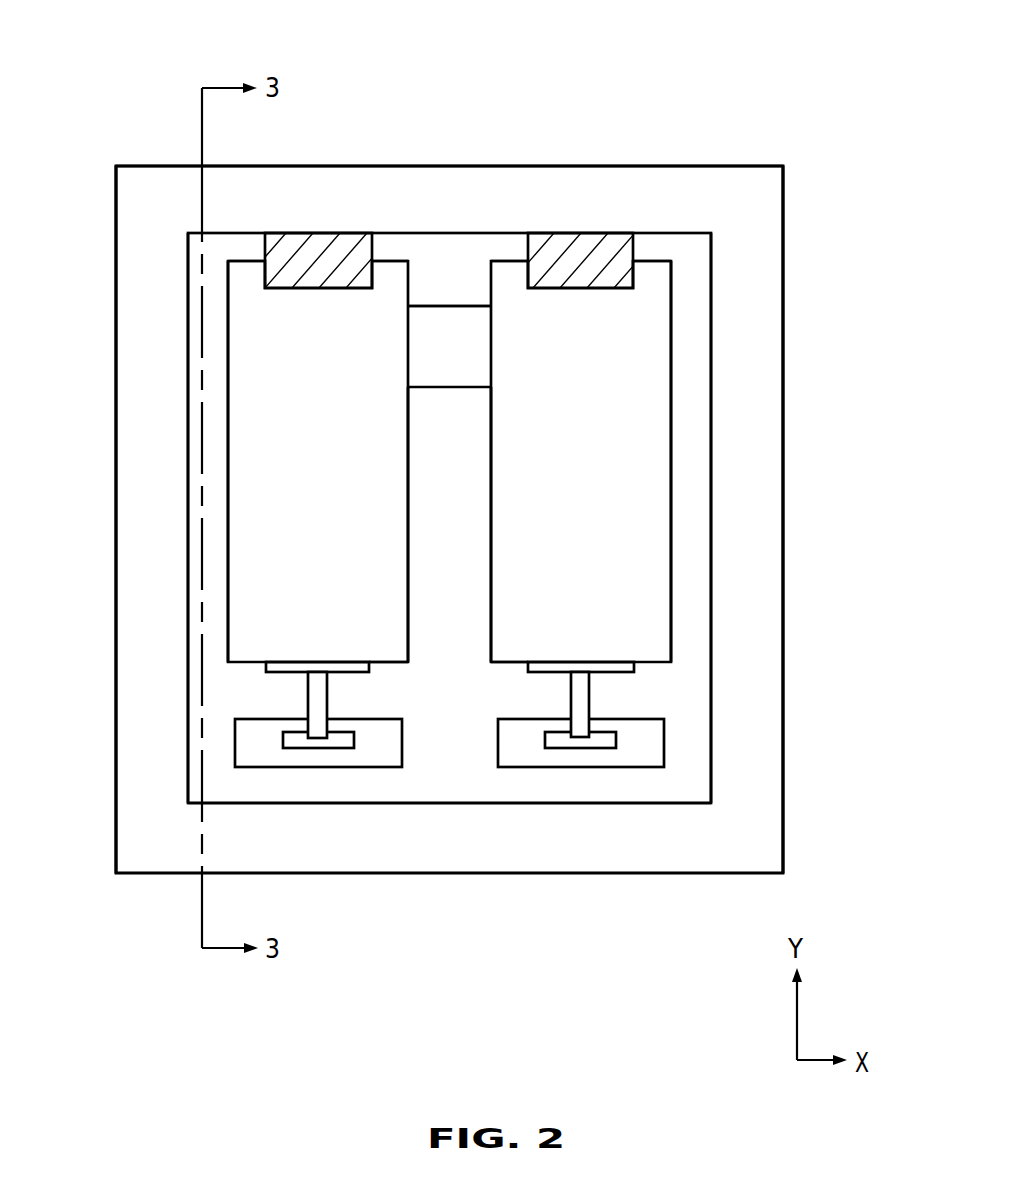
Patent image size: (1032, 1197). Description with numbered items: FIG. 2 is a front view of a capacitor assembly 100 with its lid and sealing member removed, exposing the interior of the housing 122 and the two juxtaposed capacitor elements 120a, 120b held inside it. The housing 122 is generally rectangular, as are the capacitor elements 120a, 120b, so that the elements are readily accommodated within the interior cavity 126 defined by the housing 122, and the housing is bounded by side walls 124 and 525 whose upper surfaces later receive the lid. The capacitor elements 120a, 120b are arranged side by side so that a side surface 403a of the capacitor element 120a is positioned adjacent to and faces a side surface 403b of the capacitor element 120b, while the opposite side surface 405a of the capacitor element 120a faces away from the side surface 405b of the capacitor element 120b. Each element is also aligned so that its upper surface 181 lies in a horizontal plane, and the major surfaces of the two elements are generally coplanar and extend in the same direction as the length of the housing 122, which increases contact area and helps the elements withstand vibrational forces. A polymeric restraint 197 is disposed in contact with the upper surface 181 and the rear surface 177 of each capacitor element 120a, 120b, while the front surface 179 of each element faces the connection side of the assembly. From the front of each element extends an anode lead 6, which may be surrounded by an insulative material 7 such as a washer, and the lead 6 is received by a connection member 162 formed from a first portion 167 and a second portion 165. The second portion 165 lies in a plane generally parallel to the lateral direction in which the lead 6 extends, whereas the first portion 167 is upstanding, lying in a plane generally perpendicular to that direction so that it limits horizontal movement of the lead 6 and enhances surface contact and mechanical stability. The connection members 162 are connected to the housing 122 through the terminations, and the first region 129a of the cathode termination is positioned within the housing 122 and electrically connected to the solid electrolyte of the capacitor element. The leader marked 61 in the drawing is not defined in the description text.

The capacitor assembly 100 is at (748, 112).
The housing 122 is at (808, 658).
The side wall 124 is at (472, 175).
The side wall 525 is at (132, 500).
The capacitor element 120a is at (330, 465).
The capacitor element 120b is at (602, 465).
The polymeric restraint 197 is at (313, 243).
The rear surface 177 is at (245, 262).
The upper surface 181 is at (247, 340).
The side surface 405a is at (227, 548).
The side surface 405b is at (671, 547).
The side surface 403a is at (410, 430).
The side surface 403b is at (483, 424).
The first region of cathode termination 129a is at (433, 292).
The interior cavity 126 is at (435, 523).
The front surface 179 is at (507, 662).
The insulative material 7 is at (318, 665).
The first via 61 is at (317, 691).
The anode lead 6 is at (582, 692).
The second portion 165 is at (385, 742).
The first portion 167 is at (293, 740).
The connection member 162 is at (250, 786).